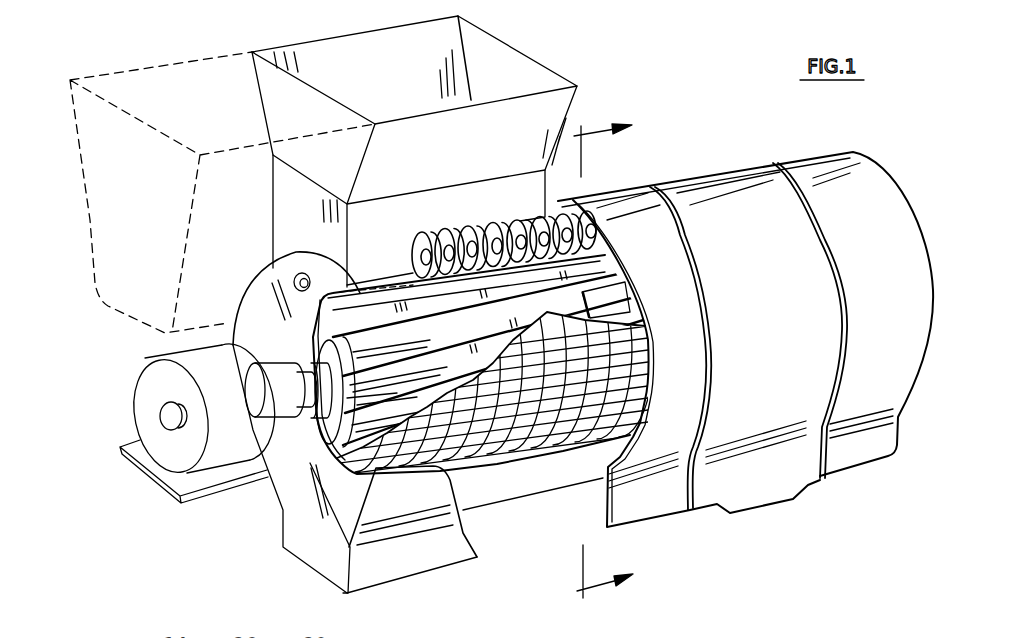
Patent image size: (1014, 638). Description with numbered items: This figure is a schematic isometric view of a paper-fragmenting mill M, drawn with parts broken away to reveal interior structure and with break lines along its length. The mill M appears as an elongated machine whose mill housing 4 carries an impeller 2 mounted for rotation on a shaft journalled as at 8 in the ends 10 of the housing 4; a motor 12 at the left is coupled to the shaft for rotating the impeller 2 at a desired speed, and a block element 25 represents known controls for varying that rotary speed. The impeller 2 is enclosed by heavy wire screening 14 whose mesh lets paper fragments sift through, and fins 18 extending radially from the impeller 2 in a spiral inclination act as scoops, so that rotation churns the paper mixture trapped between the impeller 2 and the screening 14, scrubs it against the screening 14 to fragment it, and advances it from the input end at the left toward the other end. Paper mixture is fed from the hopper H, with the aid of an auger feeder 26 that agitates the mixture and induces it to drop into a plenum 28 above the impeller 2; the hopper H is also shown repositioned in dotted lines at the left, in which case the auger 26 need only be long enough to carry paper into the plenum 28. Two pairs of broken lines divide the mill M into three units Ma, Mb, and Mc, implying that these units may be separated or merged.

The hopper H is at (176, 48).
The mill M is at (663, 363).
The mill unit Ma is at (405, 575).
The mill unit Mb is at (760, 480).
The mill unit Mc is at (878, 450).
The impeller 2 is at (293, 478).
The mill housing 4 is at (457, 543).
The journal 8 is at (320, 413).
The end of the housing 10 is at (305, 533).
The motor 12 is at (147, 380).
The wire screening 14 is at (445, 473).
The fins 18 is at (358, 335).
The block element 25 is at (268, 362).
The auger feeder 26 is at (470, 232).
The plenum 28 is at (402, 295).